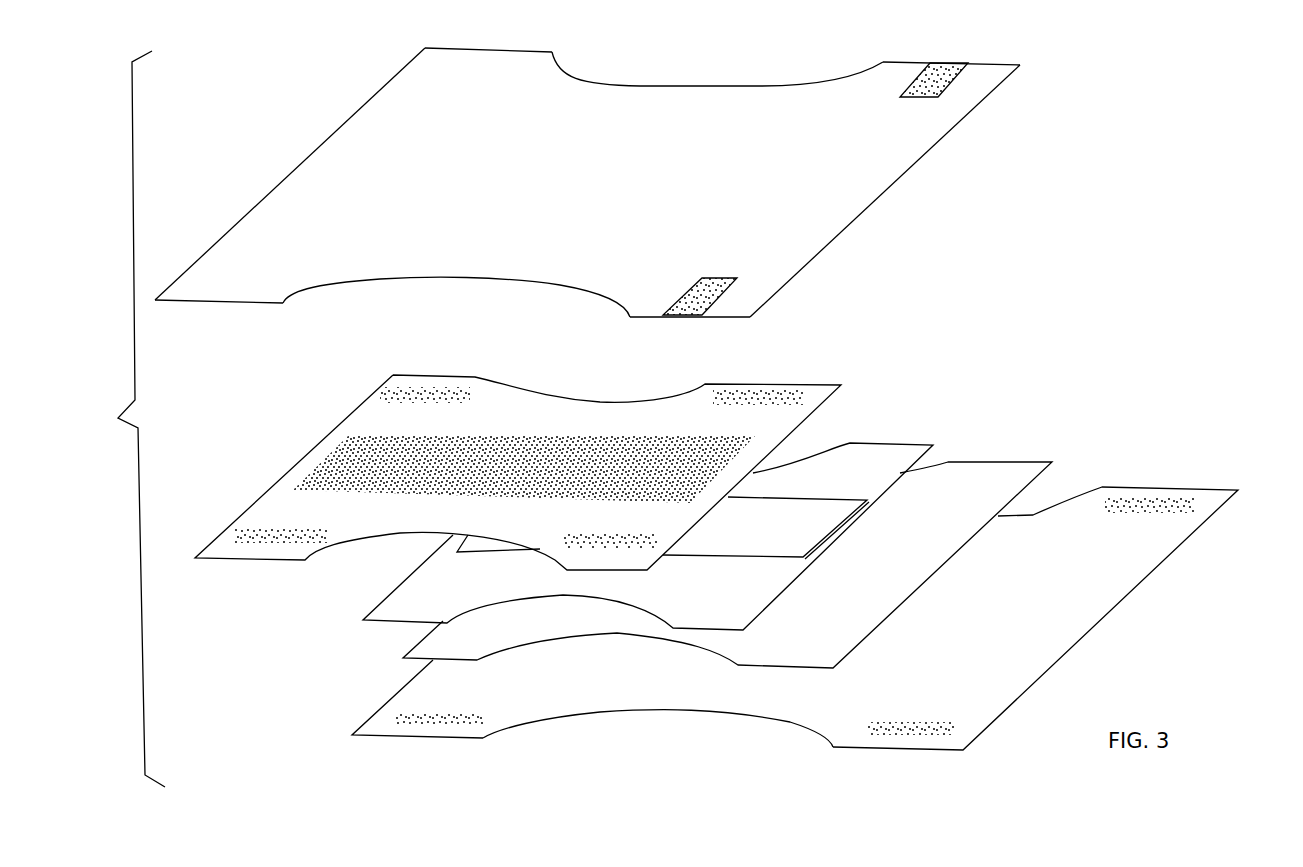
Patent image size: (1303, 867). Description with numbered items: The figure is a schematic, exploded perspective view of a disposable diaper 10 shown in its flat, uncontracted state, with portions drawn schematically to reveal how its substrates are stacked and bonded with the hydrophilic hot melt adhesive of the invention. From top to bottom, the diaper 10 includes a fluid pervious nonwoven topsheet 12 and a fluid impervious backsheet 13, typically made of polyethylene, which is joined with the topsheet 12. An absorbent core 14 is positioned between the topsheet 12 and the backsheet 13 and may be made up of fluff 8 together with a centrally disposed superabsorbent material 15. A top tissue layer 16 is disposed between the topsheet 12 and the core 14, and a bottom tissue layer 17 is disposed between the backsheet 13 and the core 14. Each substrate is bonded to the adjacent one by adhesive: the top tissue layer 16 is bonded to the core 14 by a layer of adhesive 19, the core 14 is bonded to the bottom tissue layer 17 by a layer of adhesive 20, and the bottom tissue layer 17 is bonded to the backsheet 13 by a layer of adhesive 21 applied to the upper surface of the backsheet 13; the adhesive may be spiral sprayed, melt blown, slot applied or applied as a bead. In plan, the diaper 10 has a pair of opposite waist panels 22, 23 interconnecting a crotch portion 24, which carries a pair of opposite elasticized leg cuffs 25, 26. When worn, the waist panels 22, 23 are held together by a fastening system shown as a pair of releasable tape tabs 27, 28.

The fluff 8 is at (397, 613).
The diaper 10 is at (664, 413).
The nonwoven topsheet 12 is at (267, 195).
The backsheet 13 is at (1074, 650).
The absorbent core 14 is at (384, 595).
The superabsorbent material 15 is at (440, 552).
The top tissue layer 16 is at (287, 459).
The bottom tissue layer 17 is at (1026, 461).
The layer of adhesive 19 is at (558, 448).
The layer of adhesive 20 is at (808, 463).
The layer of adhesive 21 is at (440, 733).
The waist panel 22 is at (397, 80).
The waist panel 23 is at (860, 207).
The crotch portion 24 is at (546, 265).
The elasticized leg cuff 25 is at (621, 84).
The elasticized leg cuff 26 is at (455, 277).
The releasable tape tab 27 is at (910, 86).
The releasable tape tab 28 is at (718, 298).